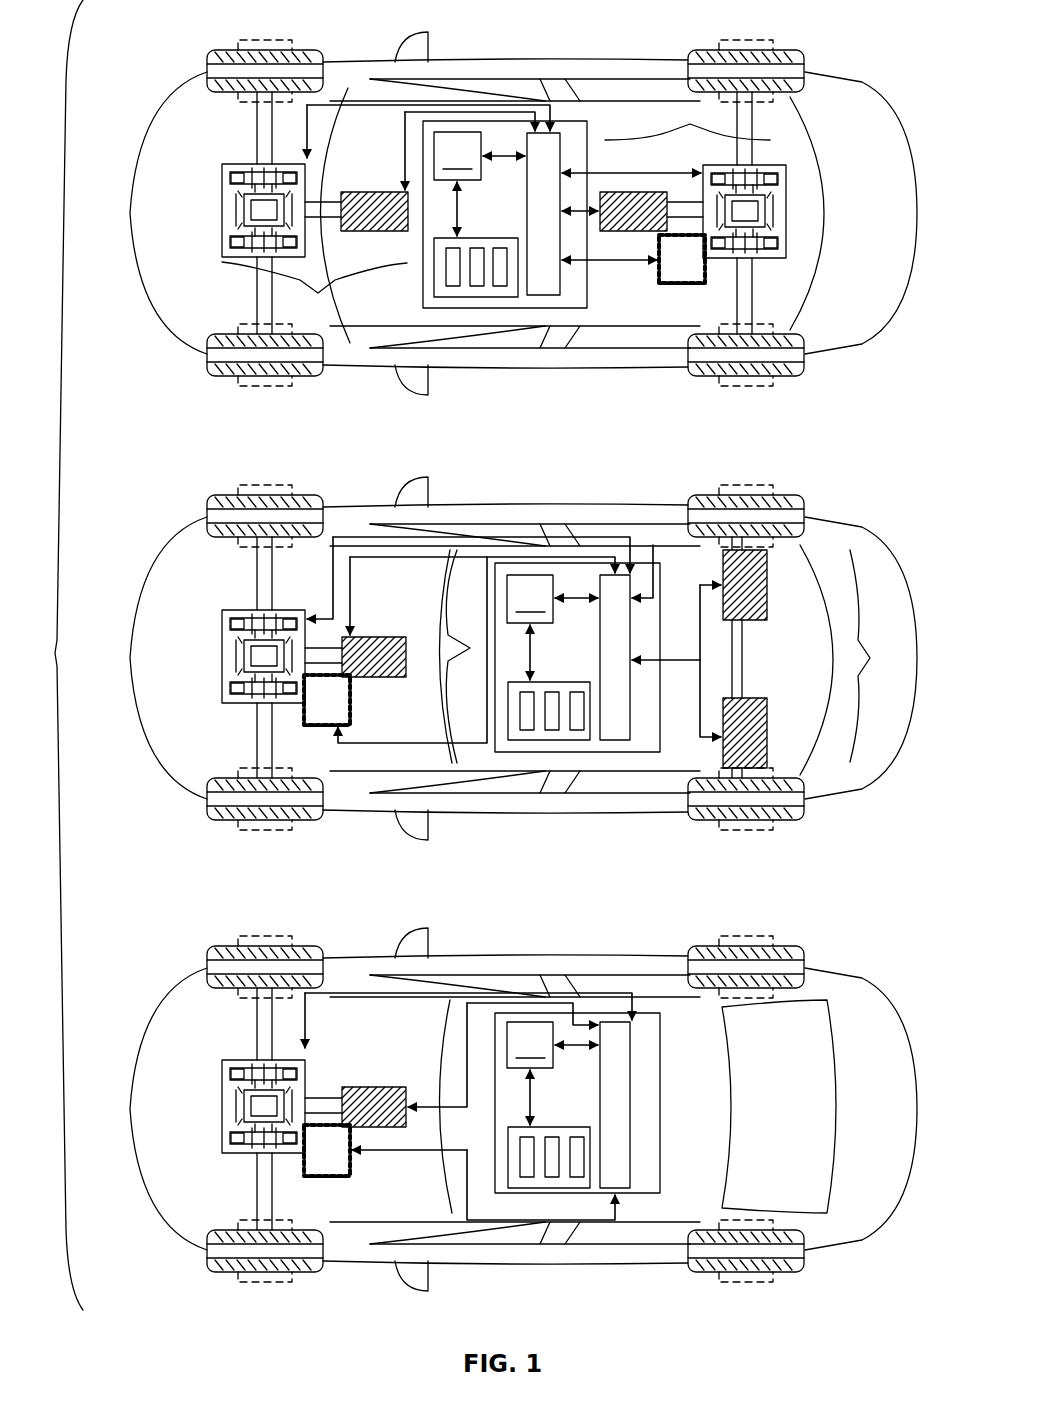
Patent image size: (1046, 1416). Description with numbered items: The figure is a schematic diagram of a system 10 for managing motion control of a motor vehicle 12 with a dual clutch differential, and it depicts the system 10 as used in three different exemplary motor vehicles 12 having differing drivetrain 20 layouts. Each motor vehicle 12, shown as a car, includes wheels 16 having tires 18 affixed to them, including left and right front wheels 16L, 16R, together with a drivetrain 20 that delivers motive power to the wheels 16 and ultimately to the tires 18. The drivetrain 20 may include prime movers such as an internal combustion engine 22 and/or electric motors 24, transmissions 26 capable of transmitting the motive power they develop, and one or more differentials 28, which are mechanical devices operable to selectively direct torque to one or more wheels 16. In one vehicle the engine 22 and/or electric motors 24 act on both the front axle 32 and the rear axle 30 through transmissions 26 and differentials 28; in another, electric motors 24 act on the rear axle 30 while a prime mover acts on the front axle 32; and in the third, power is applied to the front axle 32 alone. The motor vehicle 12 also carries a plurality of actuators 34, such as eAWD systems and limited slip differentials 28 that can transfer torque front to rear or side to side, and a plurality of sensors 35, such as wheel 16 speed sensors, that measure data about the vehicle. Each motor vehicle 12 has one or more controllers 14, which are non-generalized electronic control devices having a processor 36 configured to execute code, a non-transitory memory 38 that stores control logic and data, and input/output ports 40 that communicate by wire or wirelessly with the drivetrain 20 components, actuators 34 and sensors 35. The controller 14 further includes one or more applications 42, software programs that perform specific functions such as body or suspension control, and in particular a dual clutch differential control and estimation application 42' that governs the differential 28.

The system 10 is at (54, 655).
The motor vehicle 12 is at (645, 60).
The controller 14 is at (575, 308).
The wheel 16 is at (805, 60).
The right front wheel 16R is at (207, 60).
The left front wheel 16L is at (207, 366).
The tire 18 is at (805, 810).
The drivetrain 20 is at (566, 430).
The internal combustion engine 22 is at (640, 168).
The electric motor 24 is at (767, 603).
The transmission 26 is at (680, 284).
The differential 28 is at (222, 183).
The rear axle 30 is at (752, 160).
The front axle 32 is at (257, 128).
The actuator 34 is at (375, 191).
The sensor 35 is at (395, 805).
The processor 36 is at (265, 40).
The memory 38 is at (440, 308).
The input/output ports 40 is at (552, 128).
The application 42 is at (512, 685).
The dual clutch differential control and estimation application 42' is at (526, 780).